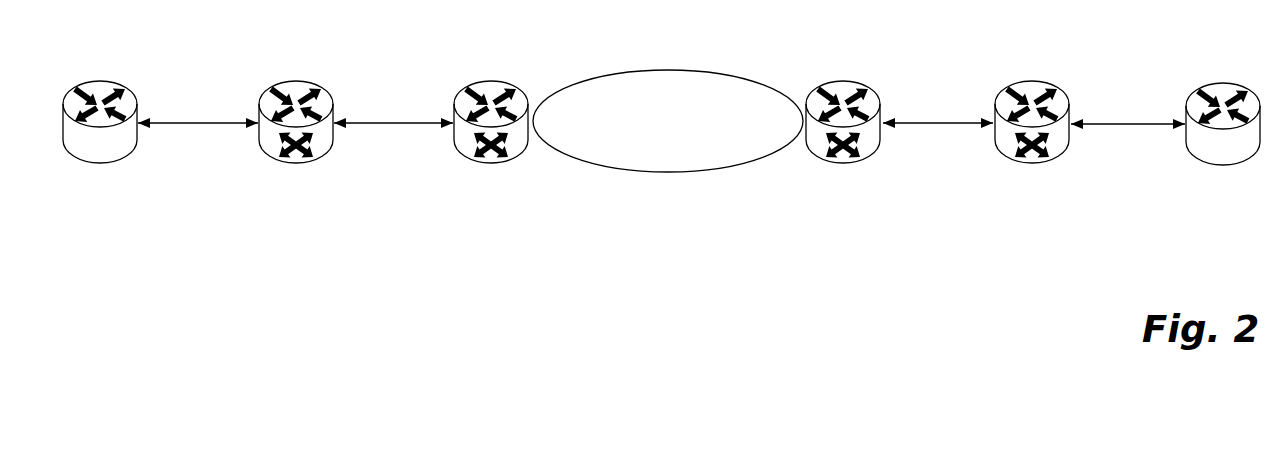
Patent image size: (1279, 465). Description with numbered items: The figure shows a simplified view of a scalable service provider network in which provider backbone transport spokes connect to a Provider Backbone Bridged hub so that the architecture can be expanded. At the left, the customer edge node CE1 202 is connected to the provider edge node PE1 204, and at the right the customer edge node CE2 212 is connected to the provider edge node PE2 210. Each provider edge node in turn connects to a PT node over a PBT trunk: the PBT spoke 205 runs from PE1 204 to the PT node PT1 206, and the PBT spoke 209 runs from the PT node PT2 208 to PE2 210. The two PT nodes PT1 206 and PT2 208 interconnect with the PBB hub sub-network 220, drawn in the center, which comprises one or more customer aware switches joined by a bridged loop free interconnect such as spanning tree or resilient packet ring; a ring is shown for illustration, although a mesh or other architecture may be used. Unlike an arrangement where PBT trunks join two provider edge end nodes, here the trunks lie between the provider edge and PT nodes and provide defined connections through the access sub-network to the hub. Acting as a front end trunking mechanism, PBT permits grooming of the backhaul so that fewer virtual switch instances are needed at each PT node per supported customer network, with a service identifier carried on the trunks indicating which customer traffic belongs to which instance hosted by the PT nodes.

The customer edge node CE1 202 is at (101, 80).
The provider edge node PE1 204 is at (272, 81).
The PBT spoke 205 is at (393, 121).
The PT node PT1 206 is at (503, 80).
The PT node PT2 208 is at (835, 80).
The PBT spoke 209 is at (943, 121).
The provider edge node PE2 210 is at (1016, 80).
The customer edge node CE2 212 is at (1208, 84).
The PBB hub sub-network 220 is at (650, 145).